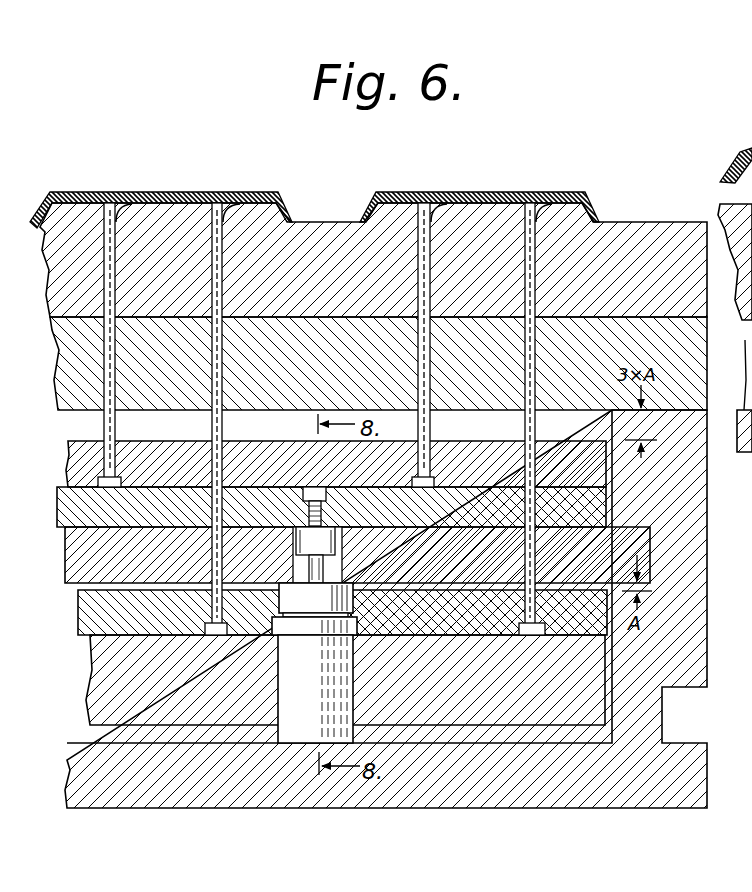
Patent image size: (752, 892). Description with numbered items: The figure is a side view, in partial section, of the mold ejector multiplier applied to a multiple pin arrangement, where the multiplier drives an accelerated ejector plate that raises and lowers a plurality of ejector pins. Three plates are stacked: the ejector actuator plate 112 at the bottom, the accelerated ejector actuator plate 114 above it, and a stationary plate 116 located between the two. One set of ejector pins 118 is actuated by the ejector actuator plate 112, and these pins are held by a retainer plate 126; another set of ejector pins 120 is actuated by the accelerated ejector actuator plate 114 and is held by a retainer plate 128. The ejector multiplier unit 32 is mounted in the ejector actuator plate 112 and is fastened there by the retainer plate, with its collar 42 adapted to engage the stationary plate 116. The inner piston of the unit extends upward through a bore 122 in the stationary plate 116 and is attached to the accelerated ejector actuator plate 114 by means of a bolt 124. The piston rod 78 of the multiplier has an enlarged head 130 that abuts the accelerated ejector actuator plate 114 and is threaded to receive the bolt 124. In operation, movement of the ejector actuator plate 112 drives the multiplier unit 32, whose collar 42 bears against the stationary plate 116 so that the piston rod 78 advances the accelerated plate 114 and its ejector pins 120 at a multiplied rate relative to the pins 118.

The ejector pins 118 is at (249, 191).
The ejector pins 120 is at (140, 190).
The retainer plate 128 is at (497, 448).
The accelerated ejector actuator plate 114 is at (590, 508).
The stationary plate 116 is at (645, 538).
The retainer plate 126 is at (590, 626).
The ejector actuator plate 112 is at (497, 716).
The bolt 124 is at (321, 510).
The enlarged head 130 is at (326, 528).
The bore 122 is at (341, 567).
The piston rod 78 is at (327, 568).
The collar 42 is at (323, 611).
The ejector multiplier unit 32 is at (320, 684).